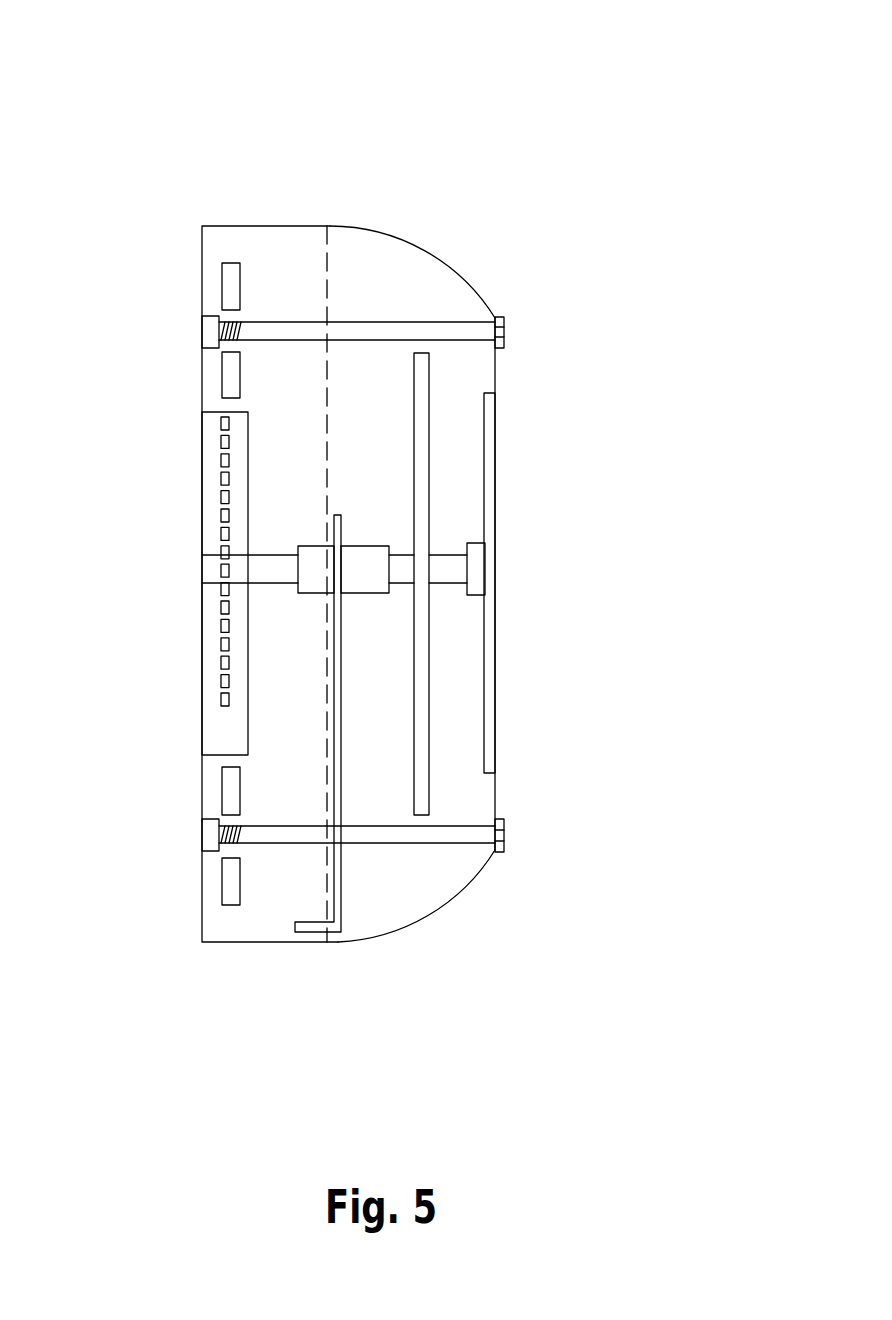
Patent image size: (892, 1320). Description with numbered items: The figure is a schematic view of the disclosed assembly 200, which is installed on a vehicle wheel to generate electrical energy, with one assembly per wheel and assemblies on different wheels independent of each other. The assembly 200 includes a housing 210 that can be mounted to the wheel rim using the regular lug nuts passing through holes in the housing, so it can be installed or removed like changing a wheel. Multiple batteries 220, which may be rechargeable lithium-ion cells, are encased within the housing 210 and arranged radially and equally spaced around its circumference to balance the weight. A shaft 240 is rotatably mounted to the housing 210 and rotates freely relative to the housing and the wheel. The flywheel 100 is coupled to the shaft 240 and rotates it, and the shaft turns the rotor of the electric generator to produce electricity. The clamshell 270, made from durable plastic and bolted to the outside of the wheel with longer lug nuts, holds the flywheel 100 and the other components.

The flywheel 100 is at (431, 715).
The assembly 200 is at (505, 148).
The housing 210 is at (328, 200).
The batteries 220 is at (211, 410).
The shaft 240 is at (446, 548).
The clamshell 270 is at (497, 482).